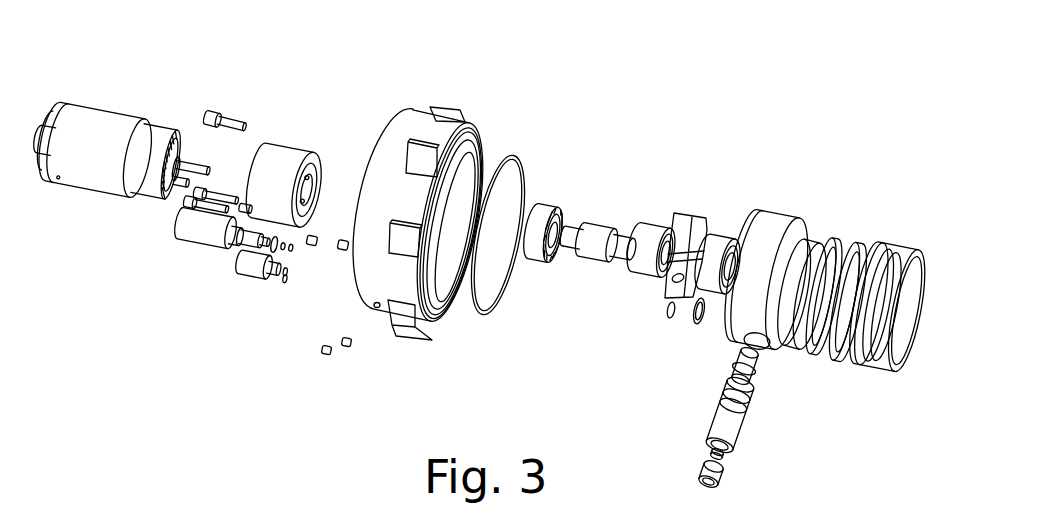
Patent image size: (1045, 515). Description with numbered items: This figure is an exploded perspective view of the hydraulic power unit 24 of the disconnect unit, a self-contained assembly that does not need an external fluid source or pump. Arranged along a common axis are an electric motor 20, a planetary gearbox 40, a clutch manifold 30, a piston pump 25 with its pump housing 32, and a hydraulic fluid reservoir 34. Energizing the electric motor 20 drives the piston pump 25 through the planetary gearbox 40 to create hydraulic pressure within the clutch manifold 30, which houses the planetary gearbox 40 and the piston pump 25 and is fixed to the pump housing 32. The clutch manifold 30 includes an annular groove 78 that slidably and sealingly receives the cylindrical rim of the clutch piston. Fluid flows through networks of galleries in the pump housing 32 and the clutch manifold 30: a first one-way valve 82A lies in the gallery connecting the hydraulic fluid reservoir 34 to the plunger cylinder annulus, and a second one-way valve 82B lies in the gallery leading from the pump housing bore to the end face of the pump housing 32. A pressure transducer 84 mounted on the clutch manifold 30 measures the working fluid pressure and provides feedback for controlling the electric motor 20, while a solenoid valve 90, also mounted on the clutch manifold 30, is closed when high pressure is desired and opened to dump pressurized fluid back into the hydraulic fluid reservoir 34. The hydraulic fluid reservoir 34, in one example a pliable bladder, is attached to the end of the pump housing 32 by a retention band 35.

The electric motor 20 is at (105, 118).
The planetary gearbox 40 is at (287, 152).
The solenoid valve 90 is at (203, 232).
The pressure transducer 84 is at (262, 263).
The first one-way valve 82A is at (344, 240).
The second one-way valve 82B is at (310, 248).
The clutch manifold 30 is at (403, 313).
The annular groove 78 is at (463, 140).
The hydraulic power unit 24 is at (618, 157).
The piston pump 25 is at (610, 315).
The pump housing 32 is at (772, 223).
The retention band 35 is at (837, 247).
The hydraulic fluid reservoir 34 is at (898, 255).